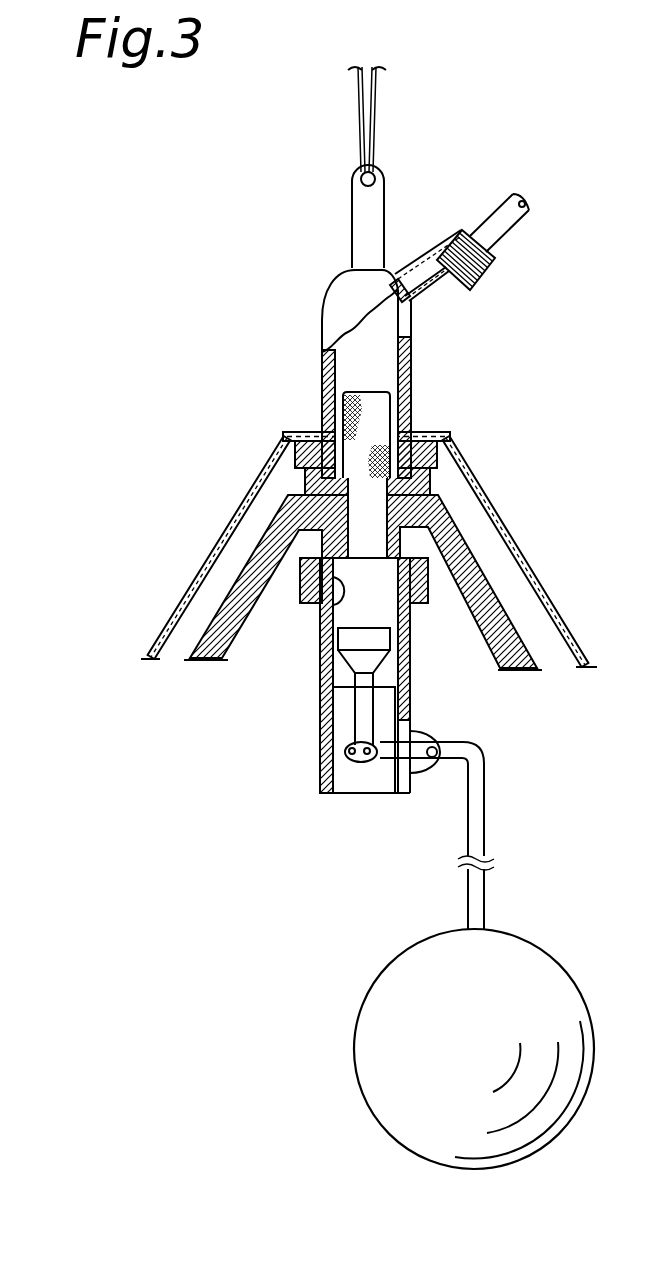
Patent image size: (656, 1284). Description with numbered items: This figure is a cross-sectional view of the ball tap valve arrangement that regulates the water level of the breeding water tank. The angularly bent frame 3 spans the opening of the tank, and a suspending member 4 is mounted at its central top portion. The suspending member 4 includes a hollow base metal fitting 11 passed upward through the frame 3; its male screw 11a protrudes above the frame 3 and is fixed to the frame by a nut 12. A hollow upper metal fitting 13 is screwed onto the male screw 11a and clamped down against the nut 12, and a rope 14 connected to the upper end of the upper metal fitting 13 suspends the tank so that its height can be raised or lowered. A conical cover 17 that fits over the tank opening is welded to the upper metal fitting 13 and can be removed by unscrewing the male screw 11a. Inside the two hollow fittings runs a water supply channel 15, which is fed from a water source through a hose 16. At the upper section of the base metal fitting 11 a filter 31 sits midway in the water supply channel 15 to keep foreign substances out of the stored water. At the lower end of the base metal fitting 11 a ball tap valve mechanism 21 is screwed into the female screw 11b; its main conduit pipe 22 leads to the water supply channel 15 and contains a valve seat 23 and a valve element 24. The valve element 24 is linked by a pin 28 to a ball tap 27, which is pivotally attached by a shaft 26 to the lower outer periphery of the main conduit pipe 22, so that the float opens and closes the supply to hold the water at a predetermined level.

The frame 3 is at (227, 603).
The suspending member 4 is at (316, 333).
The base metal fitting 11 is at (303, 527).
The male screw 11a is at (303, 484).
The female screw 11b is at (316, 624).
The nut 12 is at (433, 477).
The upper metal fitting 13 is at (413, 378).
The rope 14 is at (379, 110).
The water supply channel 15 is at (378, 370).
The hose 16 is at (511, 226).
The conical cover 17 is at (513, 527).
The ball tap valve mechanism 21 is at (420, 703).
The main conduit pipe 22 is at (318, 698).
The valve seat 23 is at (380, 673).
The valve element 24 is at (380, 640).
The shaft 26 is at (432, 760).
The ball tap 27 is at (508, 960).
The pin 28 is at (360, 762).
The filter 31 is at (378, 418).